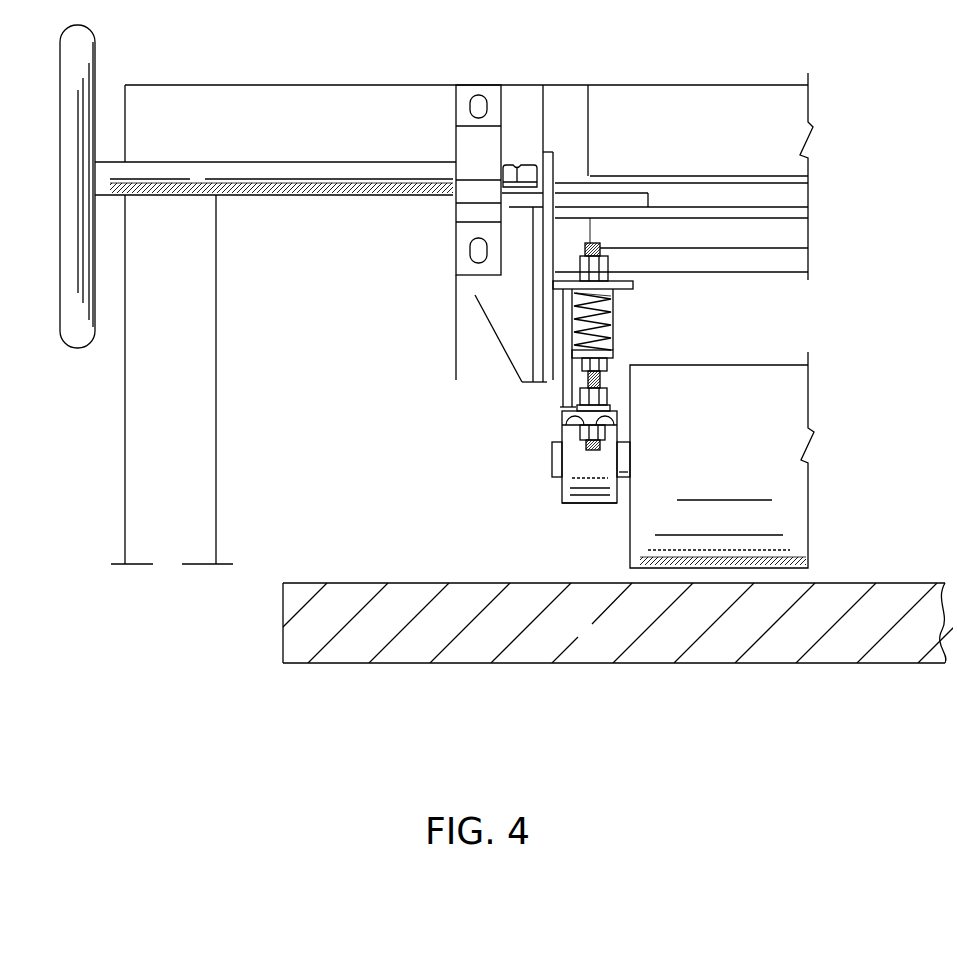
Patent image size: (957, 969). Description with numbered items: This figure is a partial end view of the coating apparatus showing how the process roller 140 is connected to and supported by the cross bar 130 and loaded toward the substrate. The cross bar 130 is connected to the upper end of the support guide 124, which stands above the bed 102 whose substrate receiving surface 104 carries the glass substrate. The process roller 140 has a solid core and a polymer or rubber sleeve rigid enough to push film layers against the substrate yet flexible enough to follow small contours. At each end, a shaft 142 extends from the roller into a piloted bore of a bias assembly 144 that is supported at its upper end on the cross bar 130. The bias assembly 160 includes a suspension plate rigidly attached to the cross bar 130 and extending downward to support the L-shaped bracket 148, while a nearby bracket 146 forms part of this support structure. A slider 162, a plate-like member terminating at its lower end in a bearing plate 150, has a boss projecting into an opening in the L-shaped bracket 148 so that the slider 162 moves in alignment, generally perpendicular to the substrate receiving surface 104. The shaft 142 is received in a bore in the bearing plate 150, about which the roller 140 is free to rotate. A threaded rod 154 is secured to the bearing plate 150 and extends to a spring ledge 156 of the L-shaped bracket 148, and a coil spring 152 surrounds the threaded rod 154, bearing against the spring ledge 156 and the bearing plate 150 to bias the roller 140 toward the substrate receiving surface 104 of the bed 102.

The bed 102 is at (585, 641).
The substrate receiving surface 104 is at (364, 583).
The support guide 124 is at (200, 392).
The cross bar 130 is at (378, 105).
The process roller 140 is at (793, 400).
The shaft 142 is at (558, 455).
The bias assembly 144 is at (494, 322).
The bracket 146 is at (463, 308).
The L-shaped bracket 148 is at (636, 285).
The bearing plate 150 is at (598, 504).
The coil spring 152 is at (615, 334).
The threaded rod 154 is at (572, 378).
The spring ledge 156 is at (617, 291).
The bias assembly 160 is at (653, 243).
The slider 162 is at (556, 396).